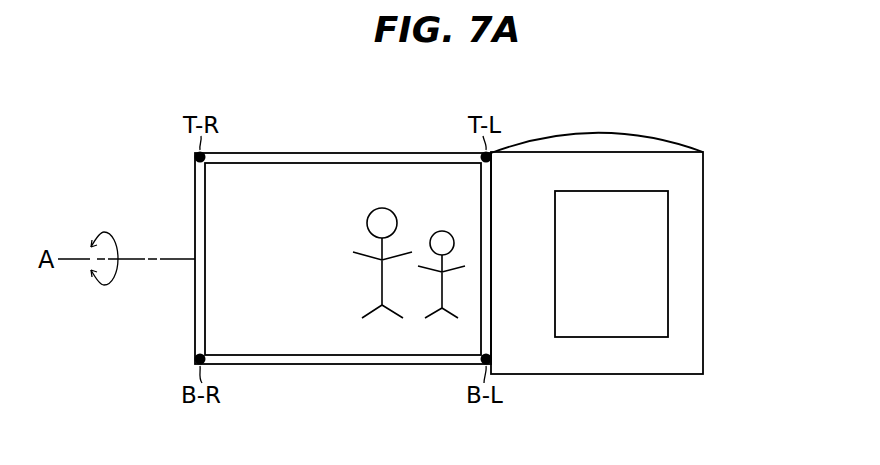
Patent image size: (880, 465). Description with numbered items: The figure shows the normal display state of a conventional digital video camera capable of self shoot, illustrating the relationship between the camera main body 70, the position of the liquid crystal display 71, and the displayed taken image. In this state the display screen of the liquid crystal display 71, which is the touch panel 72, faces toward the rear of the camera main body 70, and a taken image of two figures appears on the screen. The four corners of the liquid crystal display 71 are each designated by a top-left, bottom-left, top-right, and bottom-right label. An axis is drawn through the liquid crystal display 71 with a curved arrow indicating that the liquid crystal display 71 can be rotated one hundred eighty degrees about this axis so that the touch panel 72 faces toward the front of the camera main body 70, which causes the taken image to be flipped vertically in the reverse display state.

The camera main body 70 is at (700, 322).
The liquid crystal display 71 is at (381, 366).
The touch panel 72 is at (304, 344).